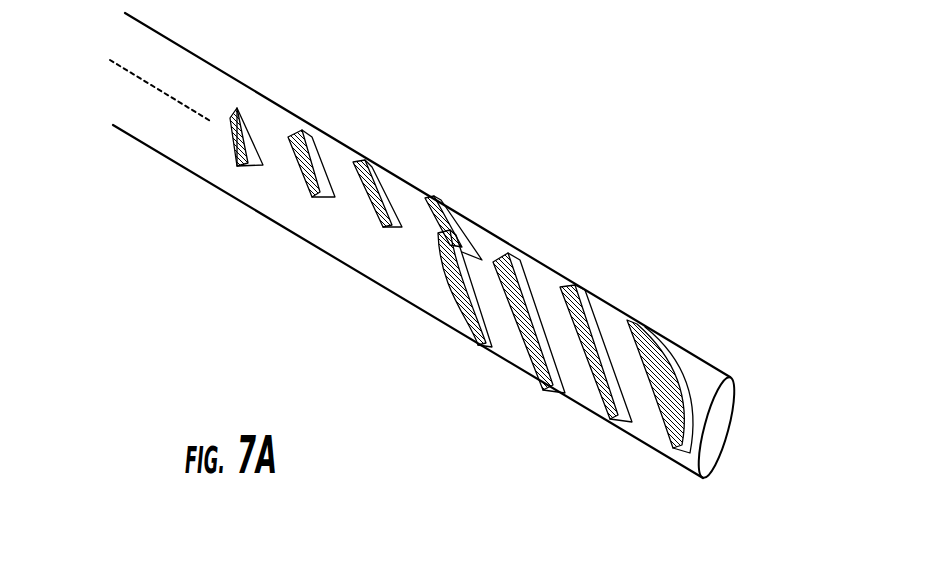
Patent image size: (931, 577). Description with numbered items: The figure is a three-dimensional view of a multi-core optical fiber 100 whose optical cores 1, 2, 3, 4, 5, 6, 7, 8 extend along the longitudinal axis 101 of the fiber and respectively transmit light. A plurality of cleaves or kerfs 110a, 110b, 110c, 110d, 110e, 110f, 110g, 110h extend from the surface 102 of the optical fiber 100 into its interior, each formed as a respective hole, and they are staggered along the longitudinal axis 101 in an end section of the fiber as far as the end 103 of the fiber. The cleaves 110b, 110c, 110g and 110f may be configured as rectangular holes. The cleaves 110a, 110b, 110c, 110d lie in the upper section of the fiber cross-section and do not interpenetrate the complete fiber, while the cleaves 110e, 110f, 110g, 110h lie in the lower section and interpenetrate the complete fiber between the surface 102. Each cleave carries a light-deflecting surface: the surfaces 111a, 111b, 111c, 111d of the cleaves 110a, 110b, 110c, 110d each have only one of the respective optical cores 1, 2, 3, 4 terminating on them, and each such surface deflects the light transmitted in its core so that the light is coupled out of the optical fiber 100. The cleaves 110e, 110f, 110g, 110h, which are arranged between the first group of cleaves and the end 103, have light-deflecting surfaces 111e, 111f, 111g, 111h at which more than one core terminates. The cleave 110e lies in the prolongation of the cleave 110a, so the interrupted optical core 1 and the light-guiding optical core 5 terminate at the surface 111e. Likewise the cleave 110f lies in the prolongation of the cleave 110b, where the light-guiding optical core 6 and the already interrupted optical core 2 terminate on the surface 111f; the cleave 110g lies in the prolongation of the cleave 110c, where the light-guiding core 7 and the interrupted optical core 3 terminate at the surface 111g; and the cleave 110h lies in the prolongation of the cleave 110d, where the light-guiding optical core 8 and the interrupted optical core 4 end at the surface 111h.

The multi-core optical fiber 100 is at (408, 93).
The longitudinal axis 101 is at (115, 73).
The surface 102 is at (187, 50).
The end 103 is at (732, 420).
The first cleave 110a is at (196, 199).
The cleave 110b is at (287, 236).
The cleave 110c is at (355, 266).
The cleave 110d is at (471, 180).
The cleave 110e is at (402, 339).
The cleave 110f is at (540, 341).
The cleave 110g is at (597, 370).
The cleave 110h is at (678, 414).
The surface 111a is at (232, 133).
The surface 111b is at (300, 168).
The surface 111c is at (370, 196).
The surface 111d is at (430, 197).
The light-deflecting surface 111e is at (480, 300).
The light-deflecting surface 111f is at (515, 282).
The light-deflecting surface 111g is at (585, 310).
The light-deflecting surface 111h is at (660, 343).
The first optical core 1 is at (250, 155).
The second optical core 2 is at (320, 192).
The optical core 3 is at (384, 212).
The optical core 4 is at (463, 205).
The light-guiding optical core 5 is at (456, 320).
The light-guiding optical core 6 is at (531, 365).
The light-guiding core 7 is at (604, 410).
The light-guiding optical core 8 is at (671, 450).